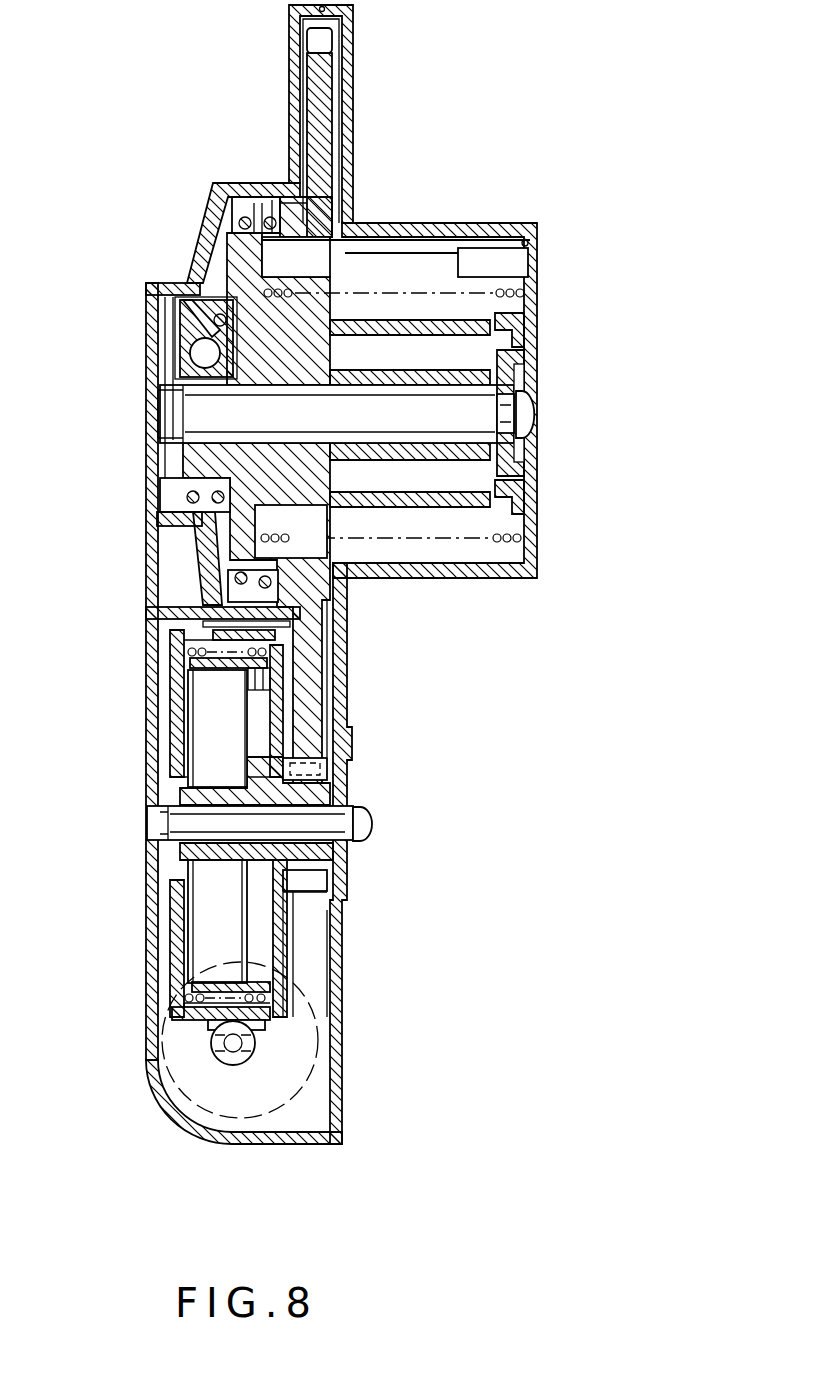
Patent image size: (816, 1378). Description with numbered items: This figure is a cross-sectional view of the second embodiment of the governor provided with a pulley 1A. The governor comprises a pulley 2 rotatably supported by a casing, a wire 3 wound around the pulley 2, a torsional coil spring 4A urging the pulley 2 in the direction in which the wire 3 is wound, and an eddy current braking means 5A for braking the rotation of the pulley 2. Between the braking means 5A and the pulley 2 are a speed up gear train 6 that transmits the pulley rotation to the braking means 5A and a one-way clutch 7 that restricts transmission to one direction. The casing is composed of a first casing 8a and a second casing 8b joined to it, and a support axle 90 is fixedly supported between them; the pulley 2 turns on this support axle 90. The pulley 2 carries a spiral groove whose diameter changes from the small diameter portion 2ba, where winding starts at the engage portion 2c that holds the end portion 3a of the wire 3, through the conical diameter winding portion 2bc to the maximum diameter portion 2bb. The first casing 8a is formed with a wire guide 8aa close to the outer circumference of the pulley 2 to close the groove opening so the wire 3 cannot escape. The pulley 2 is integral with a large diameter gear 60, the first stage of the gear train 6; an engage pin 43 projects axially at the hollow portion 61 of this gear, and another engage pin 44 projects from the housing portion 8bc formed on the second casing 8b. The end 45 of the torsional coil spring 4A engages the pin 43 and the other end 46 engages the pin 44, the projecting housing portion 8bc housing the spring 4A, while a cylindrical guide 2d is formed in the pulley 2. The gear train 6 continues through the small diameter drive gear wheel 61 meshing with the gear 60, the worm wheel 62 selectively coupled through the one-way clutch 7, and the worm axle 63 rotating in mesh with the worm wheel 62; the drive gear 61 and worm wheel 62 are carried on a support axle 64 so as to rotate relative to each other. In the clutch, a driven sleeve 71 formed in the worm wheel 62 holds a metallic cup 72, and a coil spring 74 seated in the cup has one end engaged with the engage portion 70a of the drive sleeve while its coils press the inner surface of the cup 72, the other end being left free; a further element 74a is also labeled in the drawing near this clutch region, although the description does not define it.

The governor provided with a pulley 1A is at (333, 574).
The pulley 2 is at (195, 465).
The small diameter portion 2ba is at (192, 283).
The maximum diameter portion 2bb is at (273, 207).
The conical diameter winding portion 2bc is at (197, 547).
The engage portion 2c is at (180, 342).
The cylindrical guide 2d is at (495, 324).
The wire 3 is at (247, 227).
The end portion of the wire 3a is at (197, 363).
The torsional coil spring 4A is at (499, 550).
The eddy current braking means 5A is at (300, 1113).
The speed up gear train 6 is at (382, 810).
The one-way clutch 7 is at (300, 922).
The first casing 8a is at (150, 630).
The wire guide 8aa is at (215, 200).
The second casing 8b is at (337, 648).
The housing portion 8bc is at (417, 232).
The engage pin 43 is at (308, 267).
The engage pin 44 is at (497, 263).
The end of the torsional coil spring 45 is at (233, 317).
The other end of the torsional coil spring 46 is at (528, 243).
The large diameter gear wheel 60 is at (323, 37).
The drive gear wheel 61 is at (297, 305).
The worm wheel 62 is at (270, 1033).
The worm axle 63 is at (220, 1048).
The support axle 64 is at (187, 823).
The engage portion 70a is at (267, 693).
The driven sleeve 71 is at (187, 1017).
The metallic cup 72 is at (180, 685).
The coil spring 74 is at (188, 998).
The bearing 74a is at (268, 670).
The support axle 90 is at (465, 417).